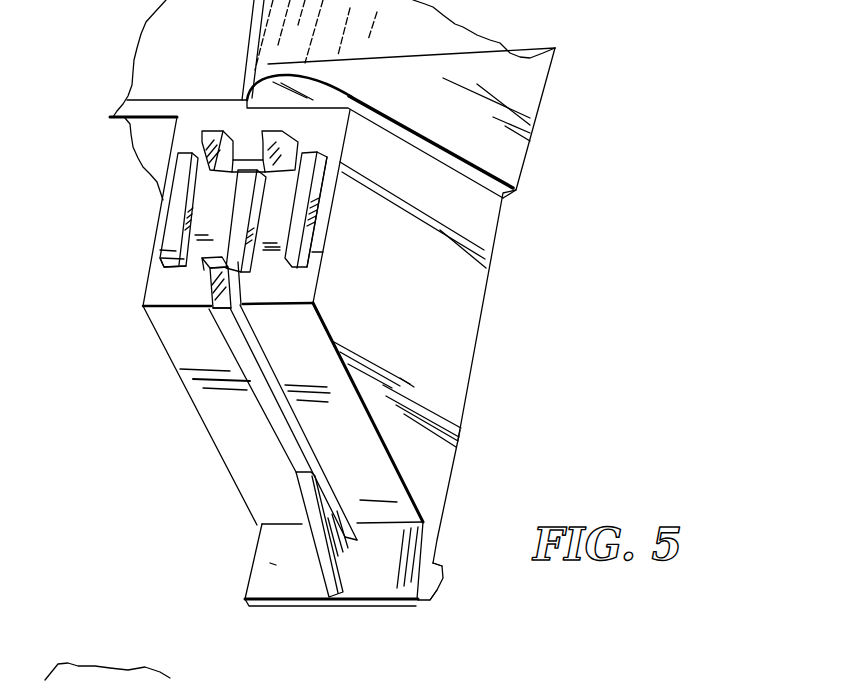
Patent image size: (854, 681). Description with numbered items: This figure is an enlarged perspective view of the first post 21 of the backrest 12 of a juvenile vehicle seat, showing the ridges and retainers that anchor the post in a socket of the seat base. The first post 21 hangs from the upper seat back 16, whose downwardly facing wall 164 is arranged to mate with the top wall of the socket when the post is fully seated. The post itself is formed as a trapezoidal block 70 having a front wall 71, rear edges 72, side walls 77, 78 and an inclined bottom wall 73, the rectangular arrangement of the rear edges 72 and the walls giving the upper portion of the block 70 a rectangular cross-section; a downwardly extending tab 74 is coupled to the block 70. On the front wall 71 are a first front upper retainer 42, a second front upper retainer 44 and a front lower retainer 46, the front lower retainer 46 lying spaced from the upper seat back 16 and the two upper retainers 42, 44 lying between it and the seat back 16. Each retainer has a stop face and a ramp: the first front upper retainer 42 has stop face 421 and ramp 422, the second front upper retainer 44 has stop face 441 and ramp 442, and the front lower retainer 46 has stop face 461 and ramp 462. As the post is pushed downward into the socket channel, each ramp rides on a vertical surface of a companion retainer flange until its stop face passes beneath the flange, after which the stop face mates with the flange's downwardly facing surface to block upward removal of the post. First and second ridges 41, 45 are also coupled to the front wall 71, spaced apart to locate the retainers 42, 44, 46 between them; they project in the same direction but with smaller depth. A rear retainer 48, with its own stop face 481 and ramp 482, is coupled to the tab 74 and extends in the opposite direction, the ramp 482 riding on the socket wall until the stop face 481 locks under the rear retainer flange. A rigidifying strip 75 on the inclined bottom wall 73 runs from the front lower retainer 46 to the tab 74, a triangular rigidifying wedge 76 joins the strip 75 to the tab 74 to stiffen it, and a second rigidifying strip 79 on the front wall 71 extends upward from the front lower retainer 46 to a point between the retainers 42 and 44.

The backrest 12 is at (553, 118).
The upper seat back 16 is at (192, 18).
The downwardly facing wall 164 is at (428, 61).
The first post 21 is at (501, 329).
The first ridge 41 is at (310, 250).
The first front upper retainer 42 is at (298, 130).
The stop face 421 is at (100, 187).
The ramp 422 is at (277, 171).
The second front upper retainer 44 is at (208, 129).
The stop face 441 is at (226, 130).
The ramp 442 is at (133, 210).
The second ridge 45 is at (162, 262).
The stop face 461 is at (163, 253).
The front lower retainer 46 is at (201, 275).
The ramp 462 is at (207, 303).
The rear retainer 48 is at (447, 580).
The stop face 481 is at (435, 565).
The ramp 482 is at (433, 593).
The trapezoidal block 70 is at (467, 230).
The front wall 71 is at (308, 283).
The rear edges 72 is at (452, 470).
The inclined bottom wall 73 is at (350, 440).
The downwardly extending tab 74 is at (275, 563).
The rigidifying strip 75 is at (283, 435).
The rigidifying wedge 76 is at (343, 553).
The side wall 77 is at (443, 368).
The side wall 78 is at (155, 228).
The rigidifying strip 79 is at (240, 203).